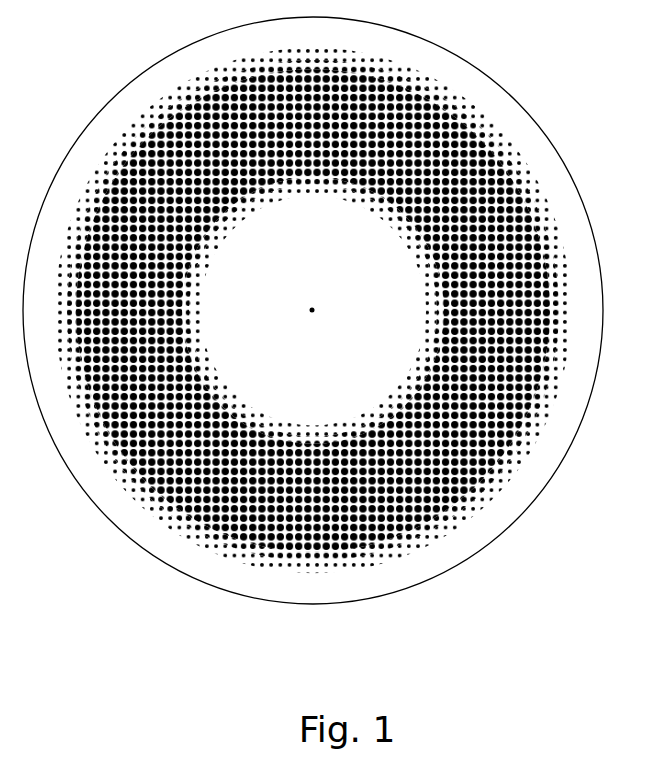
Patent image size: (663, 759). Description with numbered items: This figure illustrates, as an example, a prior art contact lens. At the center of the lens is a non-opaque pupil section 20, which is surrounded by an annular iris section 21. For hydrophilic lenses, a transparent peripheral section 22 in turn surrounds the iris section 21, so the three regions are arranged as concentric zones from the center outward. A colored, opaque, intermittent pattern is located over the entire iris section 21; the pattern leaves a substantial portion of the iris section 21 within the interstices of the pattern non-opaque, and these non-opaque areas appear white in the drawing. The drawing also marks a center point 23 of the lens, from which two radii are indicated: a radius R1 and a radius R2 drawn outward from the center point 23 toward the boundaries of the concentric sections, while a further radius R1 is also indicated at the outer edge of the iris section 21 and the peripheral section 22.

The pupil section 20 is at (302, 262).
The iris section 21 is at (200, 525).
The peripheral section 22 is at (90, 453).
The center point 23 is at (312, 310).
The first radius R1 is at (352, 270).
The second radius R2 is at (312, 310).